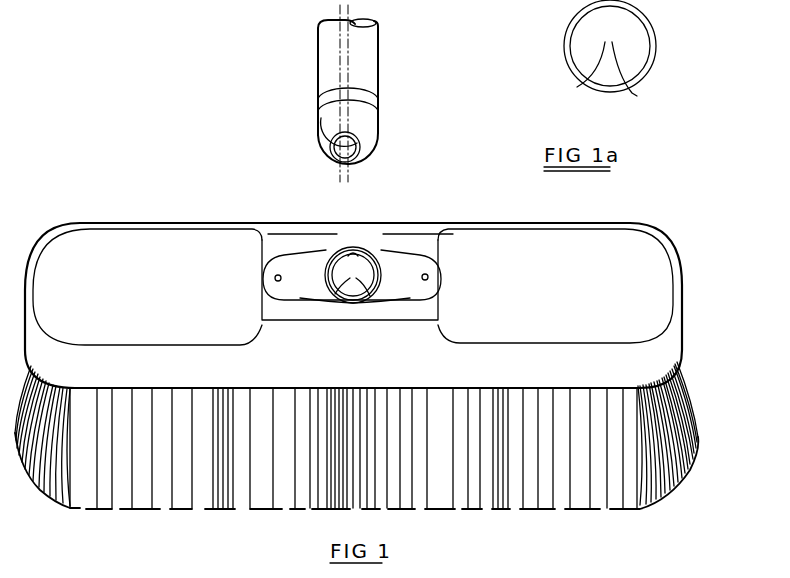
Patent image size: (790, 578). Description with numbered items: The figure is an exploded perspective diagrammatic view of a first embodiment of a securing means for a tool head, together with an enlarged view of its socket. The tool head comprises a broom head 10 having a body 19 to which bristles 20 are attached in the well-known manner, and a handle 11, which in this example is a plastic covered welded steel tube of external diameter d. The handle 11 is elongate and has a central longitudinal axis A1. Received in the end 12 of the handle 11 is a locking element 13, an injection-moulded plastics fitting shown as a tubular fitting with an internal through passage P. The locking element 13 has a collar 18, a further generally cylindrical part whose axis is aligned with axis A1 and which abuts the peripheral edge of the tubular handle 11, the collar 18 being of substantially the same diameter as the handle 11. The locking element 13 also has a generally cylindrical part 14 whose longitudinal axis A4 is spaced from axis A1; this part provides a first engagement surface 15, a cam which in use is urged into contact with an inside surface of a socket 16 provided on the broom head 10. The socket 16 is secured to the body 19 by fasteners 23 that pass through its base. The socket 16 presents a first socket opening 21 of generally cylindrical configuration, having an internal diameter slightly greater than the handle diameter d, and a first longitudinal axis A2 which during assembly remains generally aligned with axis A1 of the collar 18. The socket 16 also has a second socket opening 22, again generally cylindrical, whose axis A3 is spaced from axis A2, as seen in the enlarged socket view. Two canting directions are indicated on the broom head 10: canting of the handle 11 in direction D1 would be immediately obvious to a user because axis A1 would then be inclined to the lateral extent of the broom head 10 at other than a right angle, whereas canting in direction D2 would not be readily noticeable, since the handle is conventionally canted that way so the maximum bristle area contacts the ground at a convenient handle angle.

In FIG. 1, the broom head 10 is at (648, 258).
In FIG. 1, the handle 11 is at (381, 80).
In FIG. 1, the end 12 is at (320, 63).
In FIG. 1, the locking element 13 is at (382, 118).
In FIG. 1, the generally cylindrical part 14 is at (376, 150).
In FIG. 1, the first engagement surface 15 is at (328, 121).
In FIG. 1, the socket 16 is at (318, 308).
In FIG. 1, the collar 18 is at (376, 98).
In FIG. 1, the body 19 is at (510, 232).
In FIG. 1, the bristles 20 is at (632, 466).
In FIG. 1, the first socket opening 21 is at (381, 286).
In FIG. 1, the second socket opening 22 is at (354, 255).
In FIG. 1, the fasteners 23 is at (278, 274).
In FIG. 1, the central longitudinal axis A1 is at (355, 22).
In FIG. 1, the first longitudinal axis A2 is at (362, 292).
In FIG. 1a, the first longitudinal axis A2 is at (638, 76).
In FIG. 1, the axis A3 is at (348, 292).
In FIG. 1a, the axis A3 is at (581, 76).
In FIG. 1, the longitudinal axis A4 is at (340, 166).
In FIG. 1, the internal through passage P is at (356, 160).
In FIG. 1, the external diameter d is at (408, 35).
In FIG. 1, the direction D1 is at (137, 283).
In FIG. 1, the direction D2 is at (190, 295).